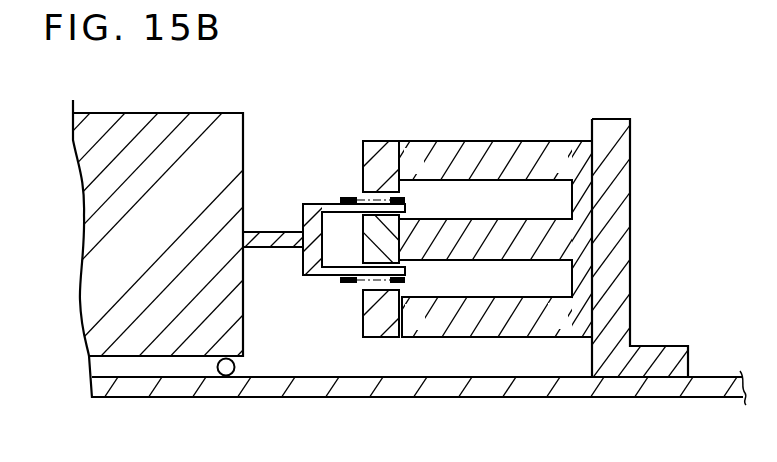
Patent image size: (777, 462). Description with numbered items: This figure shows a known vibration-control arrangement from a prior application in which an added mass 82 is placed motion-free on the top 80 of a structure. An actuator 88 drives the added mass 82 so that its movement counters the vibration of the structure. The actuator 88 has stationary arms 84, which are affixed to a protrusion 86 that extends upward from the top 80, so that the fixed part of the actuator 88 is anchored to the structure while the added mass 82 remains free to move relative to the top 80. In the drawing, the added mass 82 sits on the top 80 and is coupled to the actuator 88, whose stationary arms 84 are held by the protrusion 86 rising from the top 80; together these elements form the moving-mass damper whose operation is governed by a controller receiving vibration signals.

The top 80 is at (425, 398).
The added mass 82 is at (188, 113).
The stationary arms 84 is at (494, 141).
The protrusion 86 is at (630, 150).
The actuator 88 is at (377, 141).